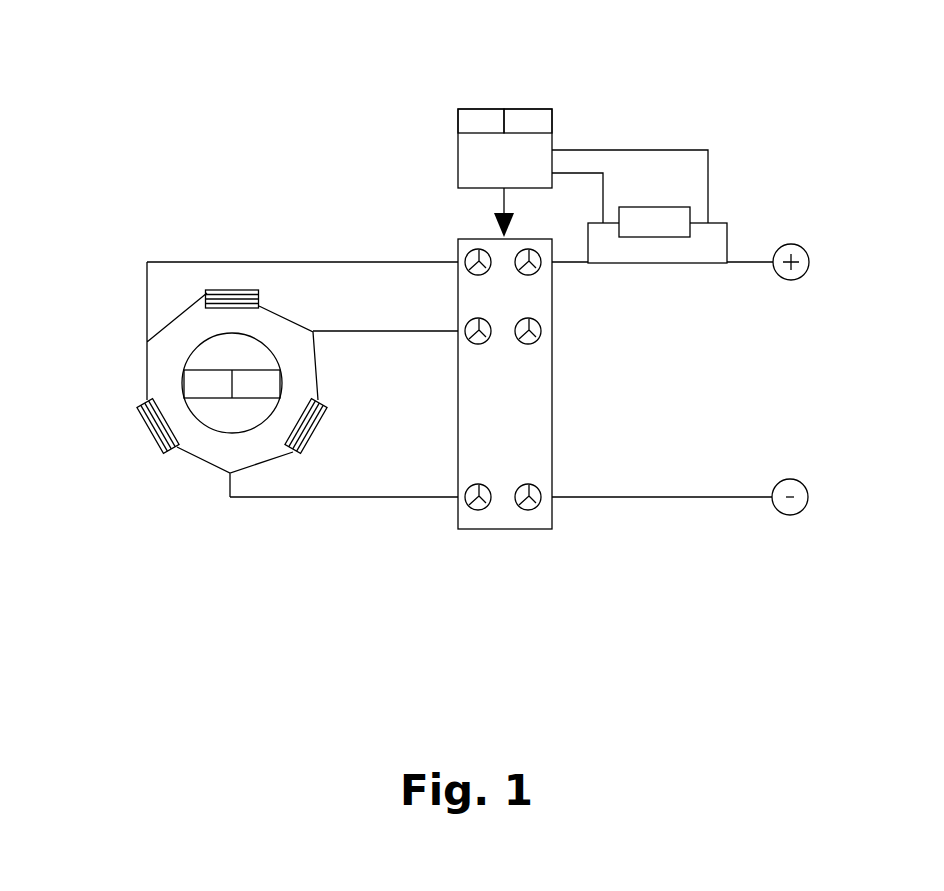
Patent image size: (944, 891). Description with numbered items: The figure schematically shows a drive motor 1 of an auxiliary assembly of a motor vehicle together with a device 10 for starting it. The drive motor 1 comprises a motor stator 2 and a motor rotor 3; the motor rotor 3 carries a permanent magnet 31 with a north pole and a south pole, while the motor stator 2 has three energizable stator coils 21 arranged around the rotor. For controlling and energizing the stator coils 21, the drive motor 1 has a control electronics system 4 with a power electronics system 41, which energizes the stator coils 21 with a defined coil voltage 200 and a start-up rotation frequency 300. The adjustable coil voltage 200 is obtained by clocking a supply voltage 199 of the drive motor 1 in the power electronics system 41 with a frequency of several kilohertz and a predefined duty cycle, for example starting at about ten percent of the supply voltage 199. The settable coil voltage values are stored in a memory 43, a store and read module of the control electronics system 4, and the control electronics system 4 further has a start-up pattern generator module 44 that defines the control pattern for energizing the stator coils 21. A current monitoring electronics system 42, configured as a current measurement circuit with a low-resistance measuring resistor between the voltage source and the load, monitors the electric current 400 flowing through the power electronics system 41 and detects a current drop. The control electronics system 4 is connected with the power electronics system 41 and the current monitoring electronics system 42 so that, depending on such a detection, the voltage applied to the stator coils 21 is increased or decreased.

The drive motor 1 is at (224, 422).
The motor stator 2 is at (312, 469).
The motor rotor 3 is at (187, 345).
The permanent magnet 31 is at (227, 380).
The stator coils 21 is at (233, 290).
The control electronics system 4 is at (532, 156).
The power electronics system 41 is at (532, 508).
The current monitoring electronics system 42 is at (677, 200).
The memory 43 is at (535, 113).
The start-up pattern generator module 44 is at (467, 122).
The device 10 is at (503, 362).
The supply voltage 199 is at (803, 238).
The coil voltage 200 is at (460, 436).
The start-up rotation frequency 300 is at (375, 330).
The electric current 400 is at (604, 265).